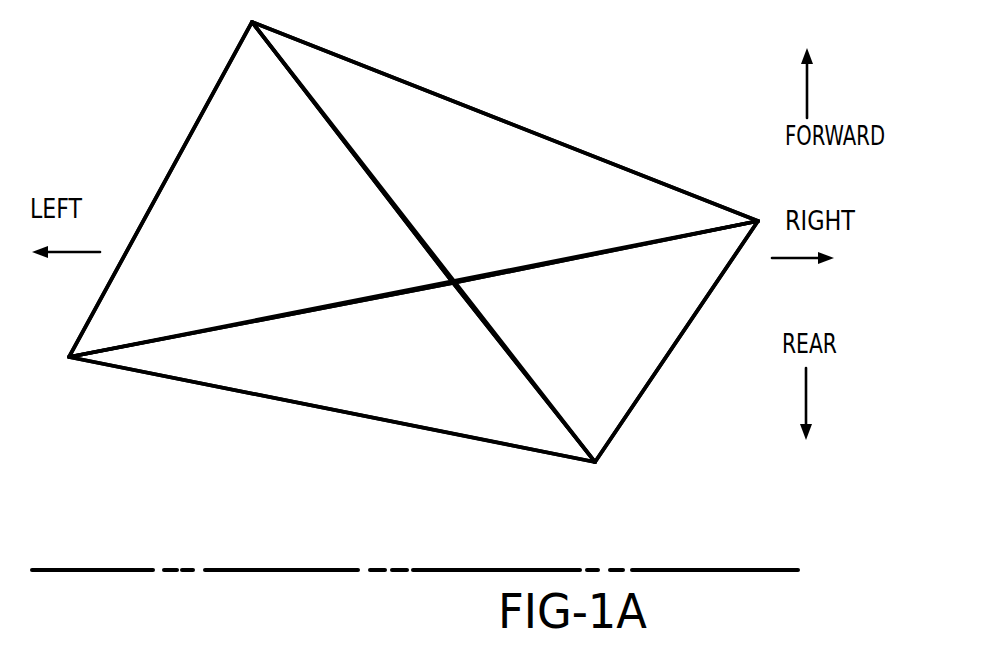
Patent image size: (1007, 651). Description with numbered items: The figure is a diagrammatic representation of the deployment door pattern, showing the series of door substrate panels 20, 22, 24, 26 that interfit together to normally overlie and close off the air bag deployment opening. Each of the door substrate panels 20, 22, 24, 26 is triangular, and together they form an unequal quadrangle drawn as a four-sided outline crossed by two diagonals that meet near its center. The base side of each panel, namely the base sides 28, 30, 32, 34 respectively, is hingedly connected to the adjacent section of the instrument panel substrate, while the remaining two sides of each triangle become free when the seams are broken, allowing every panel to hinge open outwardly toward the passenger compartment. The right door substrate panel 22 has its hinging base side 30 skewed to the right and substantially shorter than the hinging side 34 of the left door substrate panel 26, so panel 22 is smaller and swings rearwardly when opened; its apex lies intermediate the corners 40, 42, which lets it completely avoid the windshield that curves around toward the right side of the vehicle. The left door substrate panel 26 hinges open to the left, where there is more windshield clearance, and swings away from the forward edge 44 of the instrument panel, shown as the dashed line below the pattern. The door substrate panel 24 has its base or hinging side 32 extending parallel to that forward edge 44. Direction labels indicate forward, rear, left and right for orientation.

The door substrate panel 20 is at (516, 219).
The door substrate panel 22 is at (580, 334).
The door substrate panel 24 is at (377, 369).
The door substrate panel 26 is at (247, 254).
The base side 28 is at (558, 134).
The hinging base side 30 is at (650, 384).
The hinging side 32 is at (276, 401).
The hinging side 34 is at (168, 172).
The corner 40 is at (758, 211).
The corner 42 is at (598, 462).
The forward edge of the instrument panel 44 is at (648, 566).